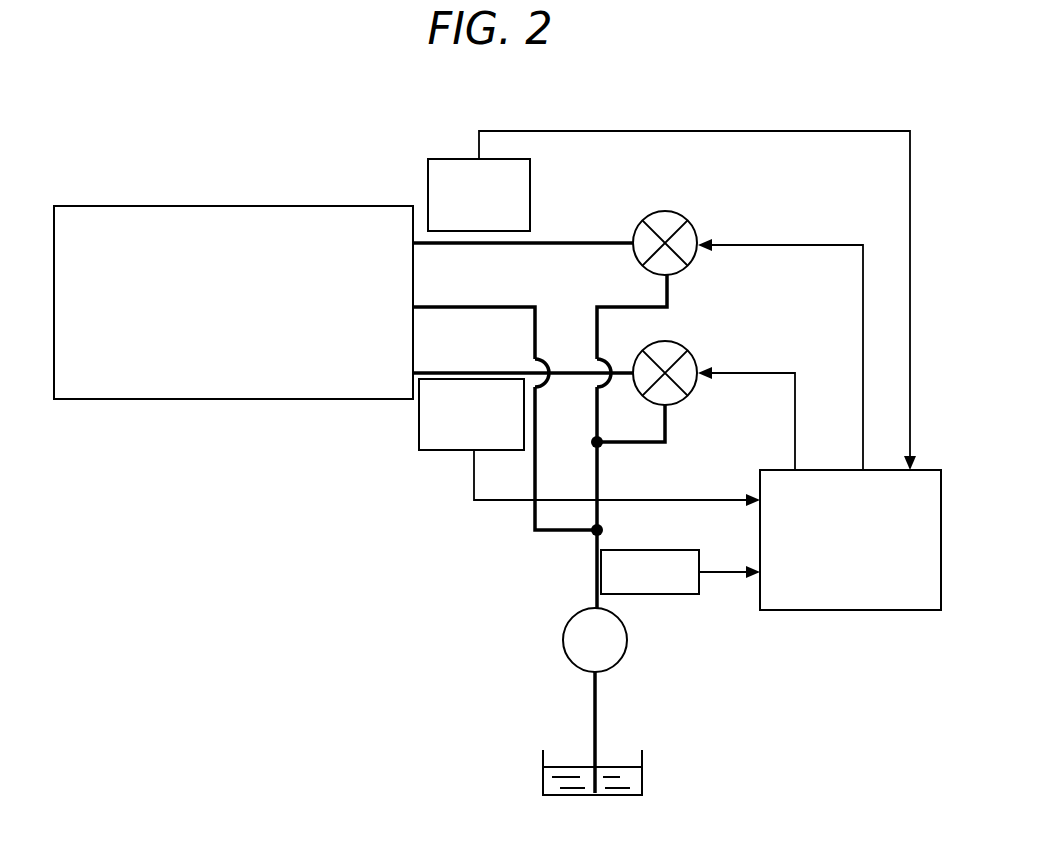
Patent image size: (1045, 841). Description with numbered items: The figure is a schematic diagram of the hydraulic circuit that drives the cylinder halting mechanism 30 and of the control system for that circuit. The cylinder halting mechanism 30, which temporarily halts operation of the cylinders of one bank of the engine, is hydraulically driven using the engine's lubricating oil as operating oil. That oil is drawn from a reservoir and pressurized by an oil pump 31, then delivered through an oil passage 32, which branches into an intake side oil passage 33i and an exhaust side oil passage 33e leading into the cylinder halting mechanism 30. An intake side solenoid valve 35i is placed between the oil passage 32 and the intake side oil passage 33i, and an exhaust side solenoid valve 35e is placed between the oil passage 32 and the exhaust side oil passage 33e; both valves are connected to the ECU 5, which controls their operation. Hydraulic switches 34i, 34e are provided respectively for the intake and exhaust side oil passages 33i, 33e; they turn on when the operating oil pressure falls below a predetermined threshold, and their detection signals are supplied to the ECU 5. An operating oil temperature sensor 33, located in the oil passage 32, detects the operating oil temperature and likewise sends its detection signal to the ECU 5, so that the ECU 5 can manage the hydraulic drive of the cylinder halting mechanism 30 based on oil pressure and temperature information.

The cylinder halting mechanism 30 is at (249, 206).
The intake side hydraulic switch 34i is at (428, 172).
The exhaust side hydraulic switch 34e is at (419, 428).
The intake side oil passage 33i is at (578, 241).
The exhaust side oil passage 33e is at (569, 372).
The oil passage 32 is at (600, 474).
The intake side solenoid valve 35i is at (690, 224).
The exhaust side solenoid valve 35e is at (688, 354).
The oil pump 31 is at (563, 638).
The operating oil temperature sensor 33 is at (676, 594).
The ECU 5 is at (853, 610).